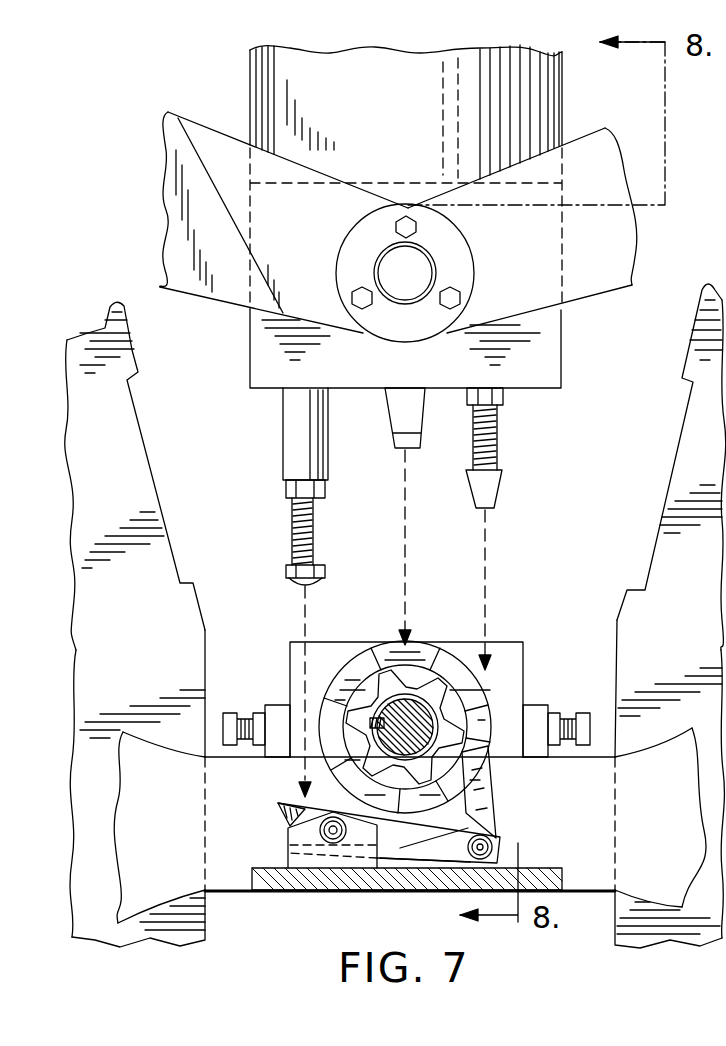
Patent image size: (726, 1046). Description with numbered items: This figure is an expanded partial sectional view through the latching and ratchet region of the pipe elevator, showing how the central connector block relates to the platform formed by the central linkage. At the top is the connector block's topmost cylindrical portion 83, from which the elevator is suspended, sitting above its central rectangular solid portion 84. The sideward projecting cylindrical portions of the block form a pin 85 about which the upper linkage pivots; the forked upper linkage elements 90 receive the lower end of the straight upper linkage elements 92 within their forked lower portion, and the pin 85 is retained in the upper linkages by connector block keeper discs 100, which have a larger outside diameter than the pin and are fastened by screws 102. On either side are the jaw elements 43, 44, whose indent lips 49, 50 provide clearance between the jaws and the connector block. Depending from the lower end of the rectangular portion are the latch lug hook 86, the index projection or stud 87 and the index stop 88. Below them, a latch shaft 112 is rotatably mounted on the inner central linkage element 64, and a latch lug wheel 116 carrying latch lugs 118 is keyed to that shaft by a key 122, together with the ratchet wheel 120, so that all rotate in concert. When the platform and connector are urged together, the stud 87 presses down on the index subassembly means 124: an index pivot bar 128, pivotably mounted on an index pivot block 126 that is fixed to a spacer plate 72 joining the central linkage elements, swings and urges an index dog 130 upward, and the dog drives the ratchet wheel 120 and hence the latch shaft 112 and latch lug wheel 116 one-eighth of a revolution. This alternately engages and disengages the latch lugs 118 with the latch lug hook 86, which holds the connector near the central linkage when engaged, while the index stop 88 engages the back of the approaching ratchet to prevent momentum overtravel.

The topmost cylindrical portion 83 is at (547, 98).
The forked upper linkage elements 90 is at (220, 162).
The straight upper linkage elements 92 is at (612, 240).
The central rectangular solid portion 84 is at (553, 344).
The connector block keeper discs 100 is at (455, 248).
The pin 85 is at (408, 273).
The screws 102 is at (457, 298).
The latch lug hooks 86 is at (388, 410).
The index projections 87 is at (322, 570).
The index stops 88 is at (497, 488).
The indent lip 49 is at (138, 418).
The indent lip 50 is at (682, 432).
The jaw element 43 is at (180, 605).
The jaw element 44 is at (617, 620).
The latch lug wheel 116 is at (430, 641).
The latch lugs 118 is at (352, 663).
The latch shaft 112 is at (470, 752).
The key 122 is at (368, 721).
The ratchet wheels 120 is at (317, 772).
The index dog 130 is at (478, 792).
The index subassembly means 124 is at (280, 843).
The index pivot bars 128 is at (392, 847).
The index pivot blocks 126 is at (323, 850).
The spacer plates 72 is at (270, 880).
The inner central linkage element 64 is at (587, 863).